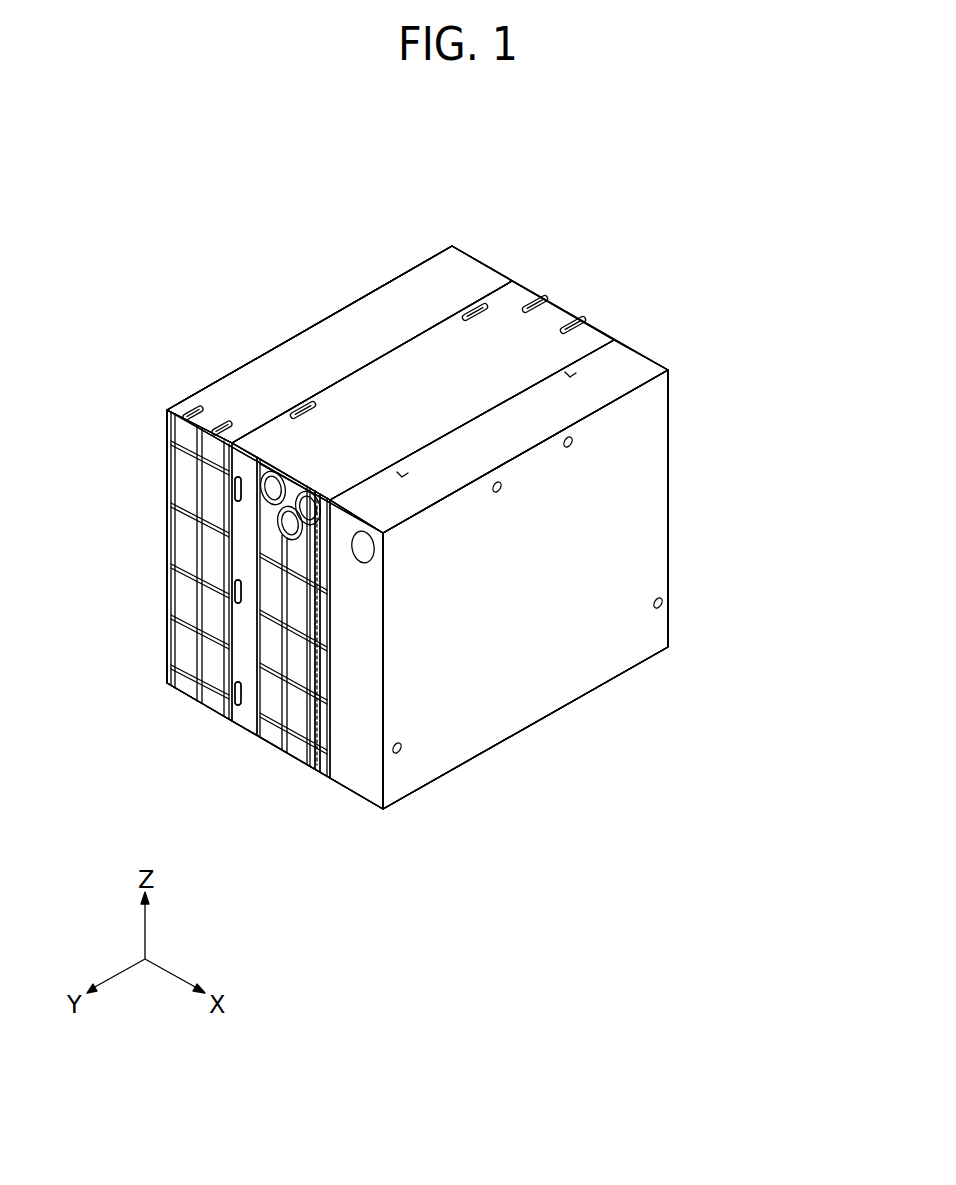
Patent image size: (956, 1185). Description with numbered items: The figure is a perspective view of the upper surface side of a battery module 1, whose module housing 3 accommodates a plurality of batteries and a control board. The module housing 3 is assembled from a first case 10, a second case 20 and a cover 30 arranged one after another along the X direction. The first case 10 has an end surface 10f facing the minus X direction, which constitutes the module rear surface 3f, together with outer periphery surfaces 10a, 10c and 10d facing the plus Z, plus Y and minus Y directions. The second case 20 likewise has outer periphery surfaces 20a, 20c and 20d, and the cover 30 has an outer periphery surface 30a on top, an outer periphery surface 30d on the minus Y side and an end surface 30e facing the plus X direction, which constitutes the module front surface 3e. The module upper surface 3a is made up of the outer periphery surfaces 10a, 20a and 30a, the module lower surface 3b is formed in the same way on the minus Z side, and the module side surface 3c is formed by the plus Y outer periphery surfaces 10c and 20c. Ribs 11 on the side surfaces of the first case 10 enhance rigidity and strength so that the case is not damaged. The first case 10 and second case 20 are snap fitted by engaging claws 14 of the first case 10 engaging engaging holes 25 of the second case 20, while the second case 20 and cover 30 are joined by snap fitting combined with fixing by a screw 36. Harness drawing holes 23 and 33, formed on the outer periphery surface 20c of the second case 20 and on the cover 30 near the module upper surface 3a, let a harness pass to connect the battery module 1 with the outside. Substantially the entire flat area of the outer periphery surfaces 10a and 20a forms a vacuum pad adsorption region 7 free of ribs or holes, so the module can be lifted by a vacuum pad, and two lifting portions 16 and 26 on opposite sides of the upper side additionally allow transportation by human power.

The battery module 1 is at (452, 208).
The module housing 3 is at (767, 264).
The vacuum pad adsorption region 7 is at (423, 344).
The first case 10 is at (465, 272).
The outer periphery surface 10a is at (330, 337).
The outer periphery surface 10c is at (185, 532).
The outer periphery surface 10d is at (539, 333).
The end surface 10f is at (309, 464).
The ribs 11 is at (198, 590).
The engaging claws 14 is at (238, 706).
The lifting portion 16 is at (190, 406).
The second case 20 is at (544, 337).
The outer periphery surface 20a is at (420, 360).
The outer periphery surface 20c is at (297, 712).
The outer periphery surface 20d is at (597, 322).
The harness drawing hole 23 is at (317, 767).
The engaging holes 25 is at (244, 646).
The lifting portion 26 is at (523, 308).
The cover 30 is at (627, 367).
The outer periphery surface 30a is at (655, 362).
The outer periphery surface 30d is at (673, 410).
The end surface 30e is at (545, 589).
The harness drawing hole 33 is at (363, 563).
The screw 36 is at (664, 601).
The module upper surface 3a is at (410, 422).
The module lower surface 3b is at (472, 762).
The module side surface 3c is at (238, 638).
The module front surface 3e is at (560, 635).
The module rear surface 3f is at (232, 369).